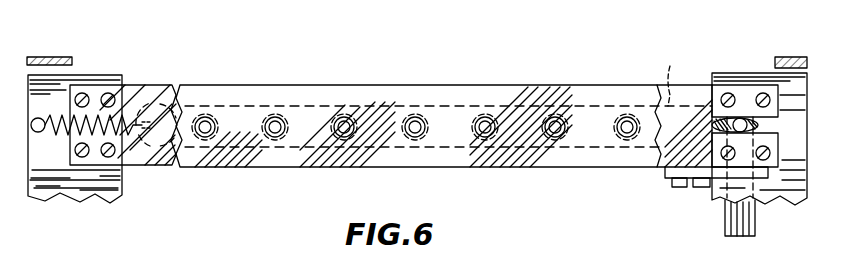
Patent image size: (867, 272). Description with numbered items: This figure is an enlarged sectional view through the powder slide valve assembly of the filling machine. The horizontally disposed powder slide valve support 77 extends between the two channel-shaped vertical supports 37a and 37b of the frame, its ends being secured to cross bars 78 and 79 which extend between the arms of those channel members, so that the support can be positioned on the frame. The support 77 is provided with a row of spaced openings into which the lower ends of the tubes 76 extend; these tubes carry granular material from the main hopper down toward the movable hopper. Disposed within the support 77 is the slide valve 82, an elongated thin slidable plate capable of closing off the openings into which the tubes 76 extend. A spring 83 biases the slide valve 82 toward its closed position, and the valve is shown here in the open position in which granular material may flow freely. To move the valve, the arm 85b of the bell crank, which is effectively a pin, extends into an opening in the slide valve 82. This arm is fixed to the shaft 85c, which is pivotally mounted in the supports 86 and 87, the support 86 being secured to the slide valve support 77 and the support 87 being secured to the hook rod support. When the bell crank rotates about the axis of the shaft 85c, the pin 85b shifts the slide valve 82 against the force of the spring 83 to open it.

The channel-shaped vertical support 37a is at (790, 57).
The channel-shaped vertical support 37b is at (48, 57).
The tubes 76 is at (270, 122).
The powder slide valve support 77 is at (556, 85).
The cross bar 78 is at (110, 75).
The cross bar 79 is at (785, 200).
The slide valve 82 is at (673, 76).
The spring 83 is at (58, 110).
The arm of bell crank 85b is at (725, 119).
The shaft 85c is at (756, 229).
The support 86 is at (665, 173).
The support 87 is at (768, 117).